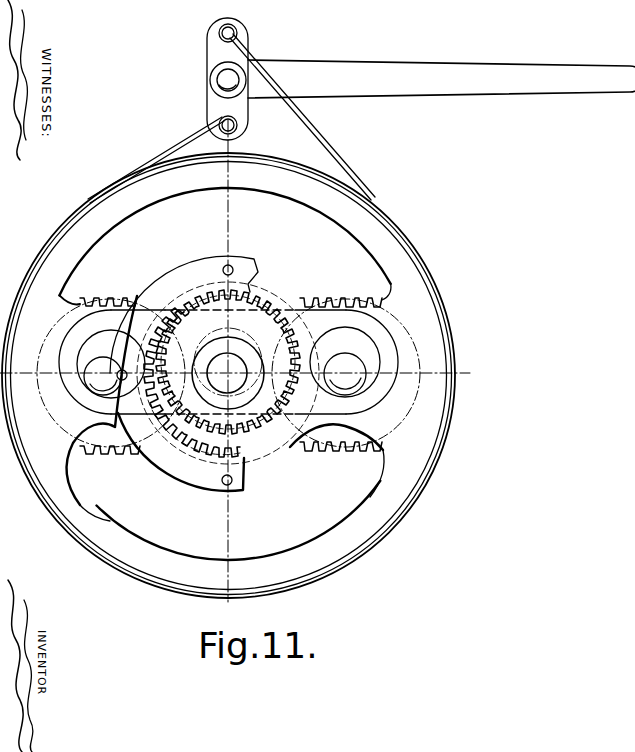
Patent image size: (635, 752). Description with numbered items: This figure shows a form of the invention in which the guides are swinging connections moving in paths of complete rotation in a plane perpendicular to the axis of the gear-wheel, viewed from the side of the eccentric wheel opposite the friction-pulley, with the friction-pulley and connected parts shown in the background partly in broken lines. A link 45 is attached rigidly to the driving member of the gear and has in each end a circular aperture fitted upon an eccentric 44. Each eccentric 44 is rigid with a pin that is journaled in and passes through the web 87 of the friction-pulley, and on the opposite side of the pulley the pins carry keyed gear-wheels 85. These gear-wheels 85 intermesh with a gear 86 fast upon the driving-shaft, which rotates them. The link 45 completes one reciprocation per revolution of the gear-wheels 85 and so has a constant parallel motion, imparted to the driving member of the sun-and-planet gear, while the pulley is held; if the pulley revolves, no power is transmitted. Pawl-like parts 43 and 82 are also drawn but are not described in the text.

The pawl 43 is at (224, 408).
The eccentric 44 is at (228, 362).
The link 45 is at (304, 392).
The pawl 82 is at (384, 460).
The gear-wheel 85 is at (107, 308).
The gear 86 is at (273, 457).
The web of the friction-pulley 87 is at (70, 262).